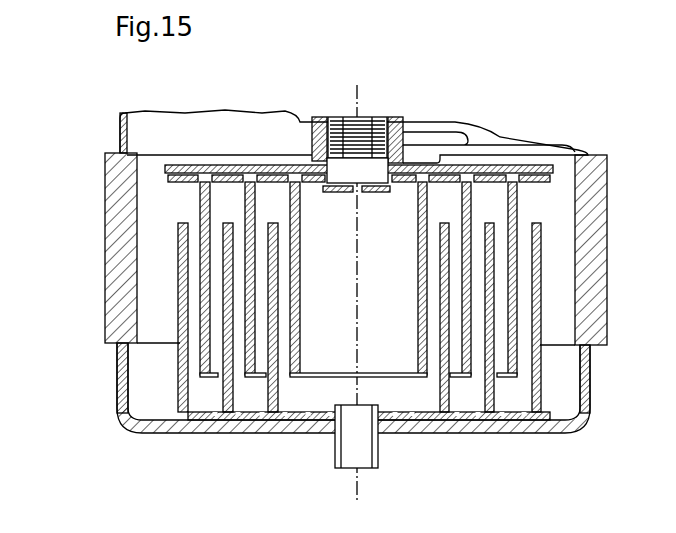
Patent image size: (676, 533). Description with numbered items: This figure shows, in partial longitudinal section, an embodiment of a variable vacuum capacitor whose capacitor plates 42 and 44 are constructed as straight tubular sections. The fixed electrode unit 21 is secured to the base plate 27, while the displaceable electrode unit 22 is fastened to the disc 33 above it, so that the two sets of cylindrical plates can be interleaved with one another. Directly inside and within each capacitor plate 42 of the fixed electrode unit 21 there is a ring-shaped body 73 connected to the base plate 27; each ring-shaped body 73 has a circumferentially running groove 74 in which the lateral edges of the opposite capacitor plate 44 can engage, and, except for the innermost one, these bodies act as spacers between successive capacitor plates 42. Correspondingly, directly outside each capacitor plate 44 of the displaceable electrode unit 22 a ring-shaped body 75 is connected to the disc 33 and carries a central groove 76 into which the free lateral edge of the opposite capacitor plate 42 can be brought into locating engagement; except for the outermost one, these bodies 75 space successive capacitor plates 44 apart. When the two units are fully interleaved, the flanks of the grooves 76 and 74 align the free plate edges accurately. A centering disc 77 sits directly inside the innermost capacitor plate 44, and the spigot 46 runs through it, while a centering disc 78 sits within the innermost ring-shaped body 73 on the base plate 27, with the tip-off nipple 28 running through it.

The fixed electrode unit 21 is at (150, 370).
The displaceable electrode unit 22 is at (170, 203).
The base plate 27 is at (171, 425).
The tip-off nipple 28 is at (378, 455).
The disc 33 is at (177, 165).
The capacitor plates of the fixed electrode unit 42 is at (533, 315).
The capacitor plates of the displaceable electrode unit 44 is at (208, 298).
The spigot 46 is at (377, 176).
The ring-shaped body 73 is at (275, 422).
The groove 74 is at (203, 411).
The ring-shaped body 75 is at (258, 165).
The central groove 76 is at (228, 185).
The centering disc 77 is at (315, 189).
The centering disc 78 is at (316, 412).